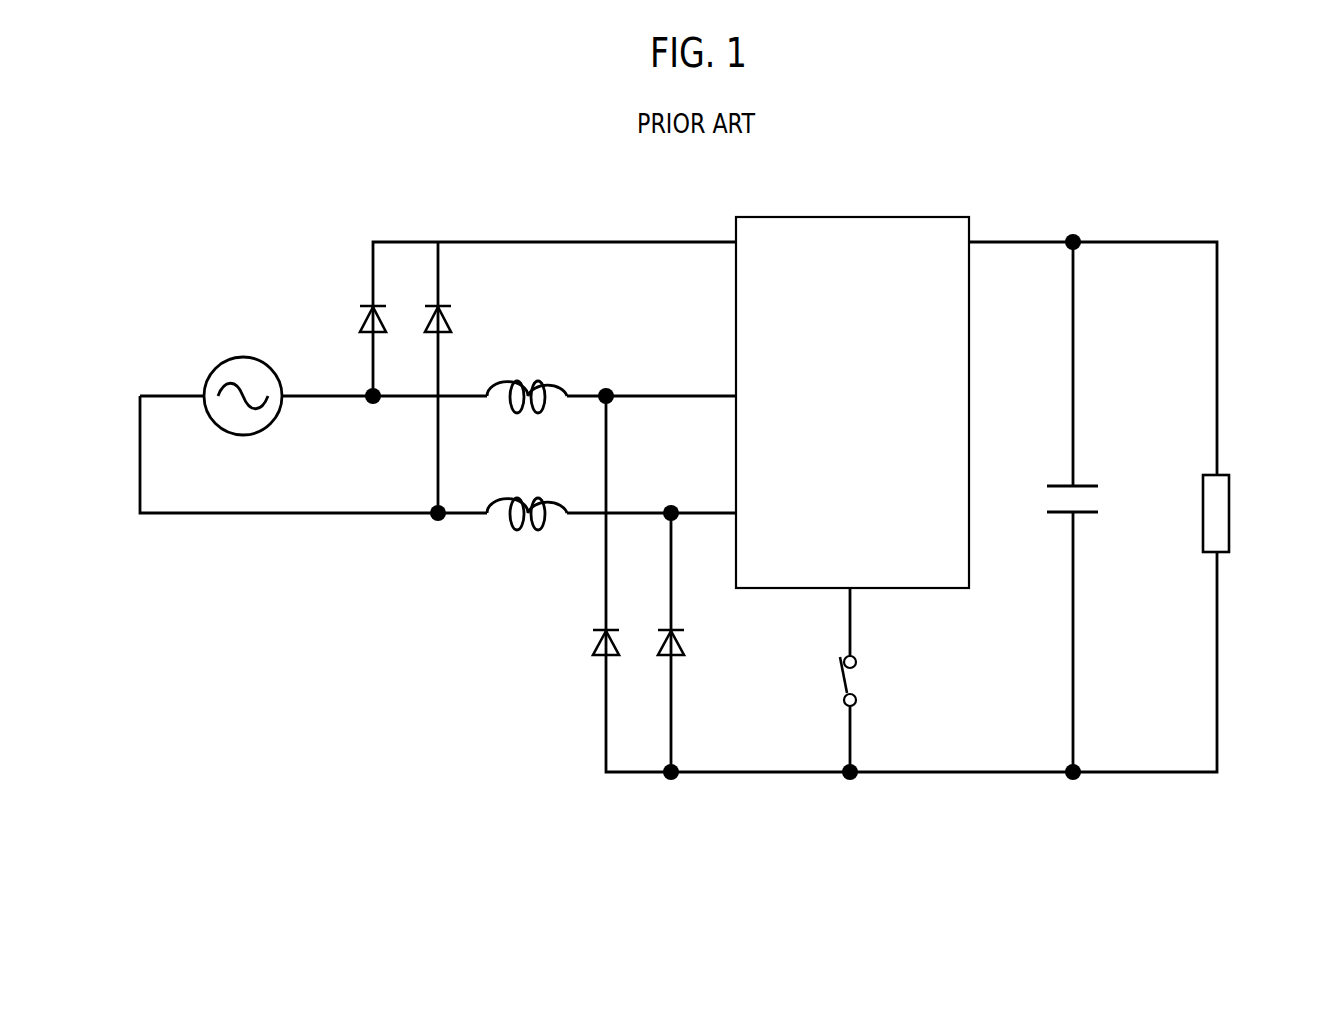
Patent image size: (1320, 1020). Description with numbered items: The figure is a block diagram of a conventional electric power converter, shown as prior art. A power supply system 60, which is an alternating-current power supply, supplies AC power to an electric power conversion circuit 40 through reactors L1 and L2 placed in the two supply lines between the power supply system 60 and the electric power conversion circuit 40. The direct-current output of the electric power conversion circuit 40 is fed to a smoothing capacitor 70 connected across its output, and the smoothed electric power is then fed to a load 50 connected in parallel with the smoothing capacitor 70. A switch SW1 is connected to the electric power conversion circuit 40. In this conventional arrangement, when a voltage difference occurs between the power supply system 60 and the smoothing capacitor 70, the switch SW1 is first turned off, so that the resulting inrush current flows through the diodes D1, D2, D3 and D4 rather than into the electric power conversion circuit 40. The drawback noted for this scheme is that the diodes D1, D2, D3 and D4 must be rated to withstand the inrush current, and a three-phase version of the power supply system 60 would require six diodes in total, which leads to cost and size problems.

The electric power conversion circuit 40 is at (950, 217).
The load 50 is at (1230, 483).
The power supply system 60 is at (272, 365).
The smoothing capacitor 70 is at (1058, 515).
The diode D1 is at (355, 304).
The diode D2 is at (419, 304).
The diode D3 is at (588, 628).
The diode D4 is at (653, 628).
The reactor L1 is at (527, 374).
The reactor L2 is at (527, 489).
The switch SW1 is at (886, 681).